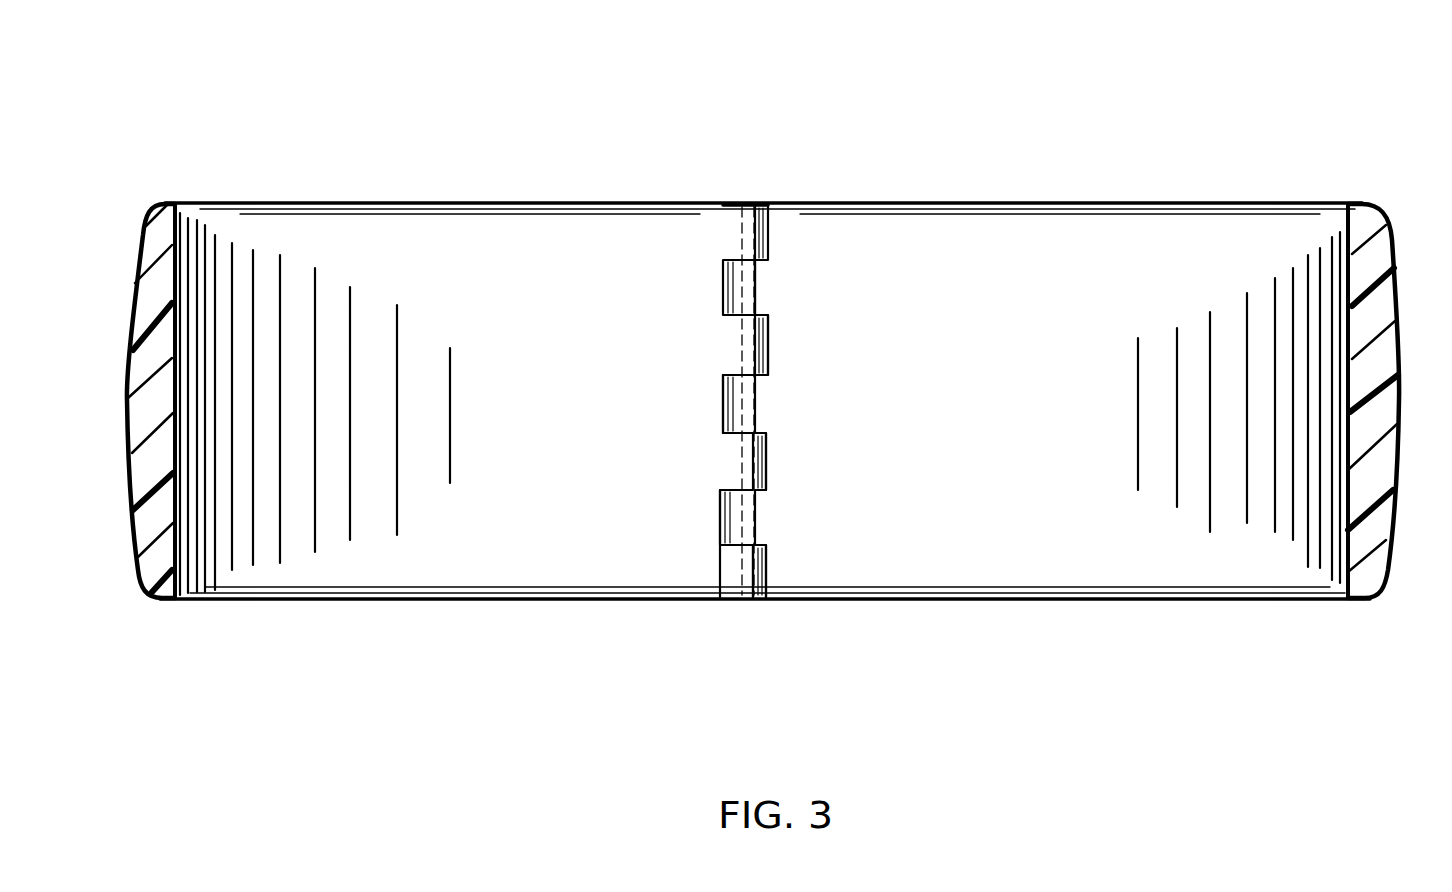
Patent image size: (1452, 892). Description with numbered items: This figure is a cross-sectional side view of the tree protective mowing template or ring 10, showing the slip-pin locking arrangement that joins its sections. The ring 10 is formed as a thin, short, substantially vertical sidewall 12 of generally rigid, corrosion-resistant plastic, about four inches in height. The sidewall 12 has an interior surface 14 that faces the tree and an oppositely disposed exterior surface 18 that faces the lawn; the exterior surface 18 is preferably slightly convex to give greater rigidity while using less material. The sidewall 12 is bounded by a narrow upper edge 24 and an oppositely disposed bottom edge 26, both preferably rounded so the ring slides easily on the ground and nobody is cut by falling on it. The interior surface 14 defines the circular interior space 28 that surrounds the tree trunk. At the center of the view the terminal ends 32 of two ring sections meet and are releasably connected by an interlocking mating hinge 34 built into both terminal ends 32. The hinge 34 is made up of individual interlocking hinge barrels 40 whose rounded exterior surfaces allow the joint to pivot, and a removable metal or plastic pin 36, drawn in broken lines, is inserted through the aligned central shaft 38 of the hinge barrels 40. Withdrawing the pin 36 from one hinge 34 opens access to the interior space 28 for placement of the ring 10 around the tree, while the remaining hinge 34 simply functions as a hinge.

The mowing template or ring 10 is at (1065, 155).
The sidewall 12 is at (1015, 548).
The interior surface 14 is at (173, 477).
The exterior surface 18 is at (127, 487).
The upper edge 24 is at (937, 203).
The bottom edge 26 is at (1107, 600).
The interior space 28 is at (534, 350).
The terminal end 32 is at (717, 560).
The hinge 34 is at (722, 345).
The pin 36 is at (750, 522).
The central shaft 38 is at (757, 283).
The hinge barrel 40 is at (770, 453).